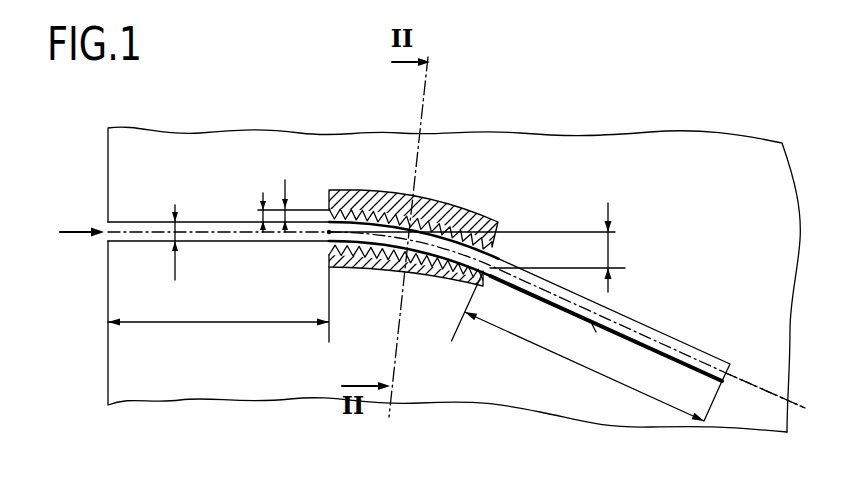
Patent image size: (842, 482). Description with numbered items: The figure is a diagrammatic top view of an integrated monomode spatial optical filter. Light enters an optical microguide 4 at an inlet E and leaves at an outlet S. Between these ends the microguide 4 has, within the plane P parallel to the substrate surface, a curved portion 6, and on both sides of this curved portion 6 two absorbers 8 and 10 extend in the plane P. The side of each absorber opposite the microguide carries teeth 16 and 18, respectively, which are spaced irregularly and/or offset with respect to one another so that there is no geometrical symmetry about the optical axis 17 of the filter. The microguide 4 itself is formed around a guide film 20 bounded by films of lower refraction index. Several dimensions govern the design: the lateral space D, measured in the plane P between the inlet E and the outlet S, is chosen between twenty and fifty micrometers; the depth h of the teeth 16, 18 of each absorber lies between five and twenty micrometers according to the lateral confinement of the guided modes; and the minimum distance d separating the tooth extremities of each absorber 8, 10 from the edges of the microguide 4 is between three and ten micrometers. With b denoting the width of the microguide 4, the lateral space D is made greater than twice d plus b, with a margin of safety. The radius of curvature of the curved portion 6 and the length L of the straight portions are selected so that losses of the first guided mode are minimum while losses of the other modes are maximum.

The optical microguide 4 is at (675, 329).
The curved portion 6 is at (420, 191).
The absorber 8 is at (420, 191).
The absorber 10 is at (420, 268).
The teeth 16 is at (372, 207).
The optical axis 17 is at (763, 387).
The teeth 18 is at (418, 262).
The guide film 20 is at (108, 371).
The inlet E is at (108, 221).
The plane P is at (707, 212).
The outlet S is at (732, 377).
The lateral space D is at (559, 247).
The length of straight portion L is at (415, 344).
The width of the microguide b is at (163, 245).
The minimum distance d is at (252, 208).
The depth of the teeth h is at (278, 194).